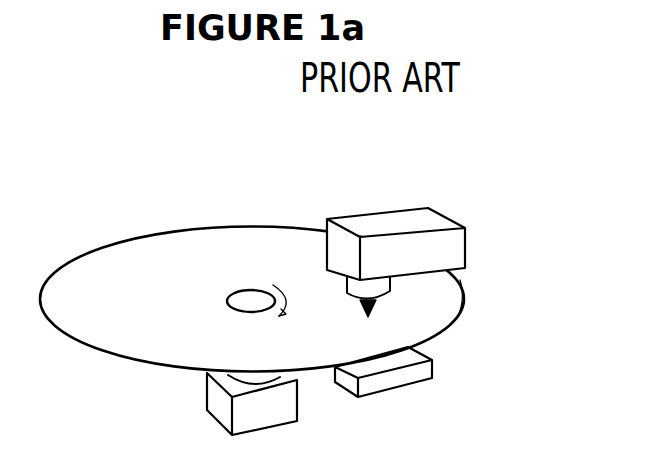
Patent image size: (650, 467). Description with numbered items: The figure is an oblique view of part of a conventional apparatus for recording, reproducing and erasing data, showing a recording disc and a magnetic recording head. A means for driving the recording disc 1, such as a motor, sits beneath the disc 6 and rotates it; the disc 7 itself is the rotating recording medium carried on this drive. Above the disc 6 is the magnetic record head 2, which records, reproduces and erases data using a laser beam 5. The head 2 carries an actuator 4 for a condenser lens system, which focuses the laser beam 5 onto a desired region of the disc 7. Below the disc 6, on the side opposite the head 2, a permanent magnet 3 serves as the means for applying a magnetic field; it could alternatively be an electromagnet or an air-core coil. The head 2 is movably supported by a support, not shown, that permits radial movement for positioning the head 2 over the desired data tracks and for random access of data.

The means for driving a recording disc 1 is at (215, 398).
The magnetic record head 2 is at (443, 215).
The permanent magnet 3 is at (403, 378).
The actuator 4 is at (345, 277).
The laser beam 5 is at (378, 311).
The disc 6 is at (470, 298).
The optical disc 7 is at (142, 253).